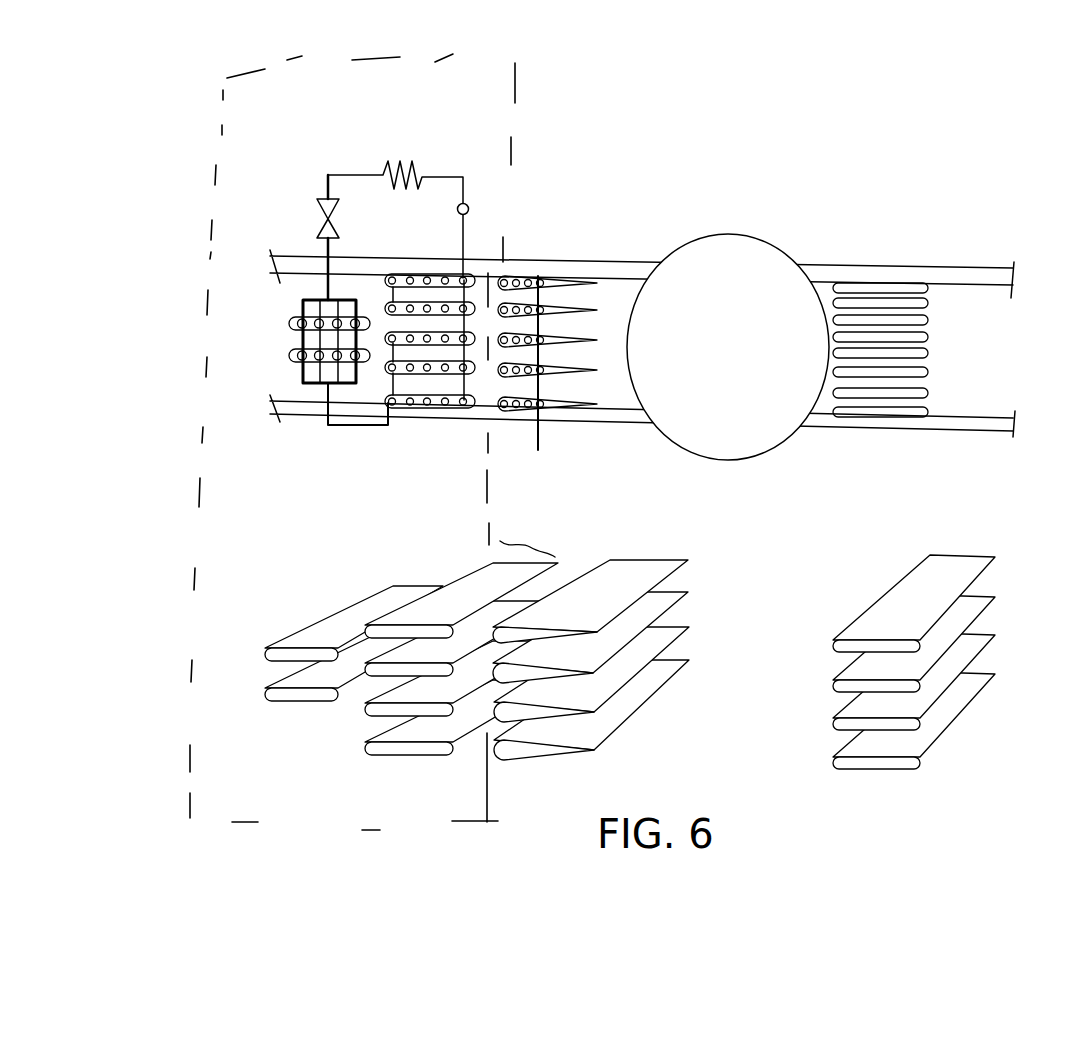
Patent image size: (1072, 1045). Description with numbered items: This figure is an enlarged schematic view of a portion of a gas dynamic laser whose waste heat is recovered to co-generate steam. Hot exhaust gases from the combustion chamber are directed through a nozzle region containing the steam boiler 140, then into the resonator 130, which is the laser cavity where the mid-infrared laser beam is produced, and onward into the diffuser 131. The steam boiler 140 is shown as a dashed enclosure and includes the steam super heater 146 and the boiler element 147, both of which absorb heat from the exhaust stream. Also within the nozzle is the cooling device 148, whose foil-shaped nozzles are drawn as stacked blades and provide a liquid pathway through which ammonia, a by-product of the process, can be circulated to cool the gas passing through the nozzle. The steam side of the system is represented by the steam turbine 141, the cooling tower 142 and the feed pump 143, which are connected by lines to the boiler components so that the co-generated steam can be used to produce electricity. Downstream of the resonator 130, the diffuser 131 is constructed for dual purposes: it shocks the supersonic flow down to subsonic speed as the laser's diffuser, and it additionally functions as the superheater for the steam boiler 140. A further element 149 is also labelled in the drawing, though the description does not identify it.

The resonator 130 is at (732, 461).
The diffuser 131 is at (895, 590).
The steam boiler 140 is at (497, 60).
The steam turbine 141 is at (317, 199).
The cooling tower 142 is at (388, 168).
The feed pump 143 is at (469, 209).
The steam super heater 146 is at (343, 613).
The boiler element 147 is at (462, 571).
The cooling device 148 is at (577, 580).
The blade top surface 149 is at (627, 560).